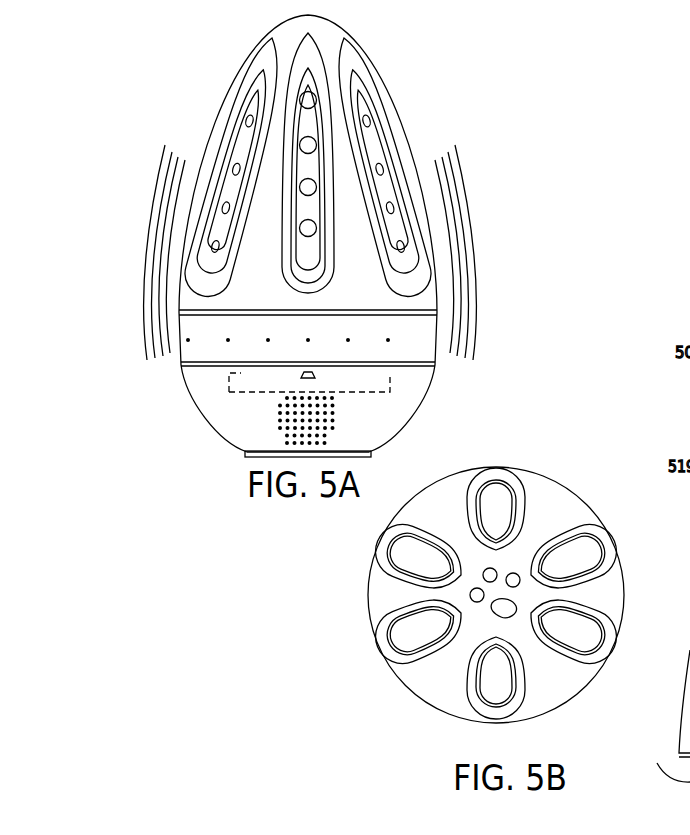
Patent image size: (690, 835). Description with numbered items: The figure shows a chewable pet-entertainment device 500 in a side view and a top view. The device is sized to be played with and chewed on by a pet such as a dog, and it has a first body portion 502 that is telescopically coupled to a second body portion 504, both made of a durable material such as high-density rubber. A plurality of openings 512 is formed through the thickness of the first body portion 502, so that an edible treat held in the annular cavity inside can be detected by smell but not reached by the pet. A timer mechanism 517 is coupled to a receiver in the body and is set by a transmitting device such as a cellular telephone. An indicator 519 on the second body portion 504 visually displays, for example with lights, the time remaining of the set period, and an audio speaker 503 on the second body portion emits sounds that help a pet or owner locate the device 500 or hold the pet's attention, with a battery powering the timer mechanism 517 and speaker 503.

In FIG. 5A, the chewable pet-entertainment device 500 is at (506, 143).
In FIG. 5B, the chewable pet-entertainment device 500 is at (622, 500).
In FIG. 5A, the first body portion 502 is at (433, 291).
In FIG. 5B, the first body portion 502 is at (612, 585).
In FIG. 5A, the audio speaker 503 is at (333, 405).
In FIG. 5A, the second body portion 504 is at (407, 389).
In FIG. 5A, the openings 512 is at (233, 153).
In FIG. 5B, the openings 512 is at (502, 494).
In FIG. 5A, the timer mechanism 517 is at (229, 381).
In FIG. 5A, the indicator 519 is at (422, 333).